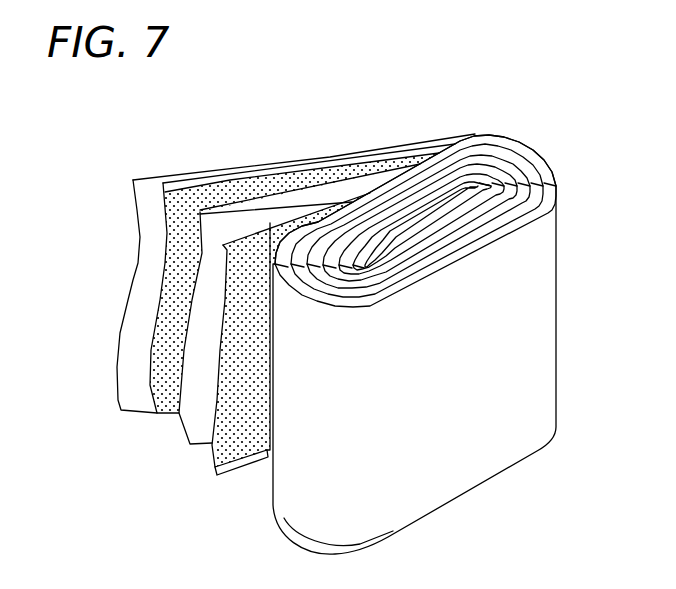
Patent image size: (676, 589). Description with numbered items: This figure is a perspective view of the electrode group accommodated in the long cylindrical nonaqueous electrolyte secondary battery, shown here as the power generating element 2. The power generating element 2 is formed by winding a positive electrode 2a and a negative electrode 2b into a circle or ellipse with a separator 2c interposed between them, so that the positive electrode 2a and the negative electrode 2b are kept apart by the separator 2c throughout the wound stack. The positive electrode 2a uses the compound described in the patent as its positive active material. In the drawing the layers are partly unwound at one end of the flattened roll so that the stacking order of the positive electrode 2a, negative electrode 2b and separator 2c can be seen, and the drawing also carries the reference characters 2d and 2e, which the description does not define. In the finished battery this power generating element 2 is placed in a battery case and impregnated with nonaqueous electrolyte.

The power generating element 2 is at (508, 486).
The positive electrode 2a is at (238, 478).
The negative electrode 2b is at (184, 183).
The separator 2c is at (134, 411).
The positive electrode active material layer 2d is at (246, 410).
The negative electrode active material layer 2e is at (172, 347).